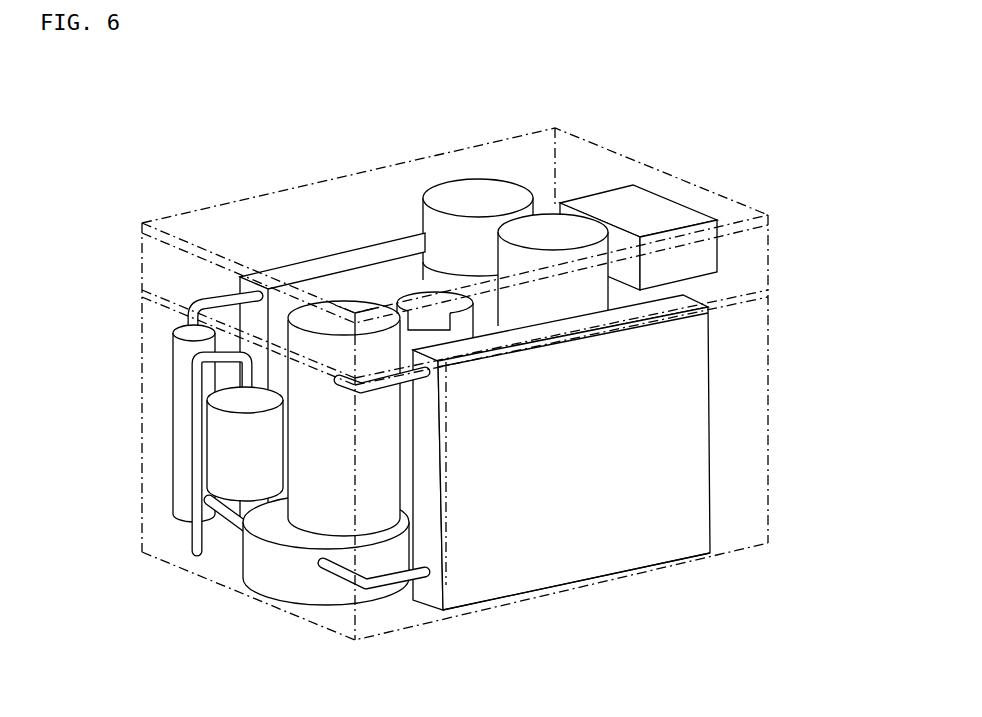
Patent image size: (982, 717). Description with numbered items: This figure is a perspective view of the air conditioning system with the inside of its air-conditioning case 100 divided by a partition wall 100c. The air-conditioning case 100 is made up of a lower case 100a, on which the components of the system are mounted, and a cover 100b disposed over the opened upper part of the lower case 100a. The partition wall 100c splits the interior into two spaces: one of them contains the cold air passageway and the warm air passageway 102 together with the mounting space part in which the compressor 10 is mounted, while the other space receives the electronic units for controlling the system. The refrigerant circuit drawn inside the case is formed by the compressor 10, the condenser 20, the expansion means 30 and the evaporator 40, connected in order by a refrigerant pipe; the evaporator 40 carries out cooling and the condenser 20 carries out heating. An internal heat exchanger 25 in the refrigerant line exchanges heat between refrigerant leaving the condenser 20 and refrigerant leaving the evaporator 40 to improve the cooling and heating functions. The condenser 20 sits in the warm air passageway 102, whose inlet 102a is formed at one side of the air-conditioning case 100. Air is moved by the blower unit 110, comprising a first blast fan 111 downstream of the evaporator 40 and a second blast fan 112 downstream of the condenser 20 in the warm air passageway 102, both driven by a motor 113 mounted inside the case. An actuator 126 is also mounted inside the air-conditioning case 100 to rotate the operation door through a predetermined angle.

The compressor 10 is at (307, 500).
The condenser 20 is at (433, 583).
The internal heat exchanger 25 is at (183, 458).
The expansion means 30 is at (423, 317).
The evaporator 40 is at (248, 293).
The air-conditioning case 100 is at (695, 185).
The lower case 100a is at (748, 246).
The cover 100b is at (738, 222).
The partition wall 100c is at (163, 303).
The warm air passageway 102 is at (458, 682).
The inlet of the warm air passageway 102a is at (450, 590).
The blower unit 110 is at (476, 193).
The first blast fan 111 is at (423, 232).
The second blast fan 112 is at (440, 273).
The motor 113 is at (517, 317).
The actuator 126 is at (648, 207).